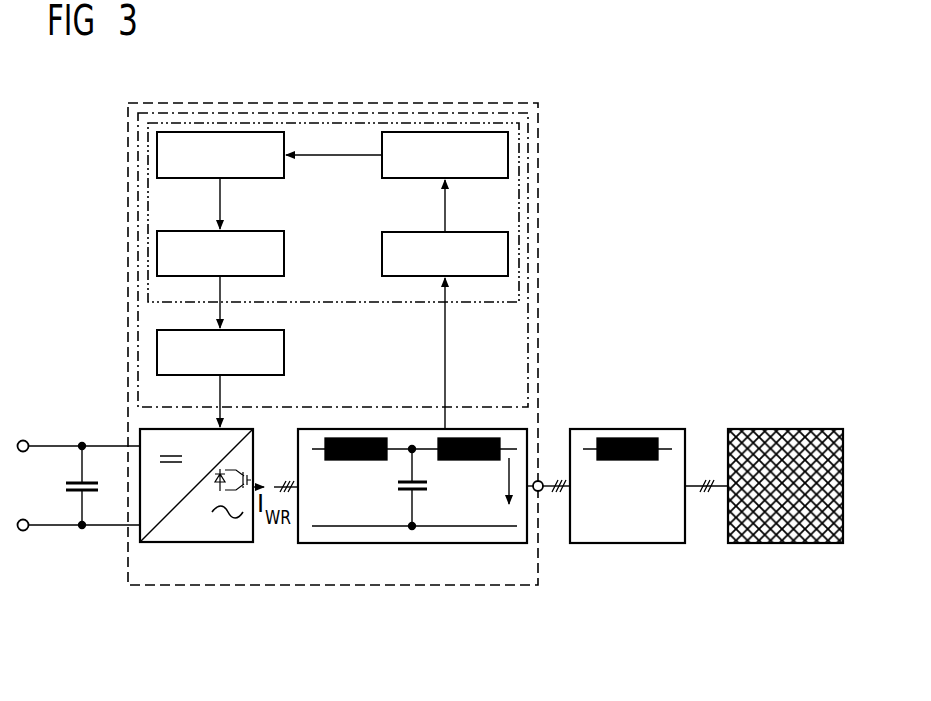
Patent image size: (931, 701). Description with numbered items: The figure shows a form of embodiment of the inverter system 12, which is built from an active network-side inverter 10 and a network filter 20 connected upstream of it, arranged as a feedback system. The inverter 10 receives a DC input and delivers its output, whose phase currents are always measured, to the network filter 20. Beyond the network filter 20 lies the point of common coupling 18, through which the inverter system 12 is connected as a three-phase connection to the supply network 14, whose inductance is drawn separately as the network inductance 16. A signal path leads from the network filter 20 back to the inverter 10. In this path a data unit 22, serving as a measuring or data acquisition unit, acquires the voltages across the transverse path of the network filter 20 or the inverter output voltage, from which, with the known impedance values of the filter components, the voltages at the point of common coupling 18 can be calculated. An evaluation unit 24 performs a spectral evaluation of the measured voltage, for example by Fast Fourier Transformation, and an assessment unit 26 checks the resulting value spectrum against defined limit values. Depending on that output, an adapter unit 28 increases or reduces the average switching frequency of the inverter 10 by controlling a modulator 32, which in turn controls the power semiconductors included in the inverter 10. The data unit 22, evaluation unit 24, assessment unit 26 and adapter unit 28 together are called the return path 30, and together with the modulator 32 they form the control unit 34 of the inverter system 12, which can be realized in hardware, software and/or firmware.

The inverter 10 is at (197, 543).
The inverter system 12 is at (335, 103).
The supply network 14 is at (785, 543).
The network inductance 16 is at (627, 543).
The point of common coupling 18 is at (541, 490).
The network filter 20 is at (413, 543).
The data unit 22 is at (458, 265).
The evaluation unit 24 is at (458, 167).
The assessment unit 26 is at (234, 167).
The adapter unit 28 is at (234, 265).
The return path 30 is at (336, 302).
The modulator 32 is at (234, 364).
The control unit 34 is at (336, 407).